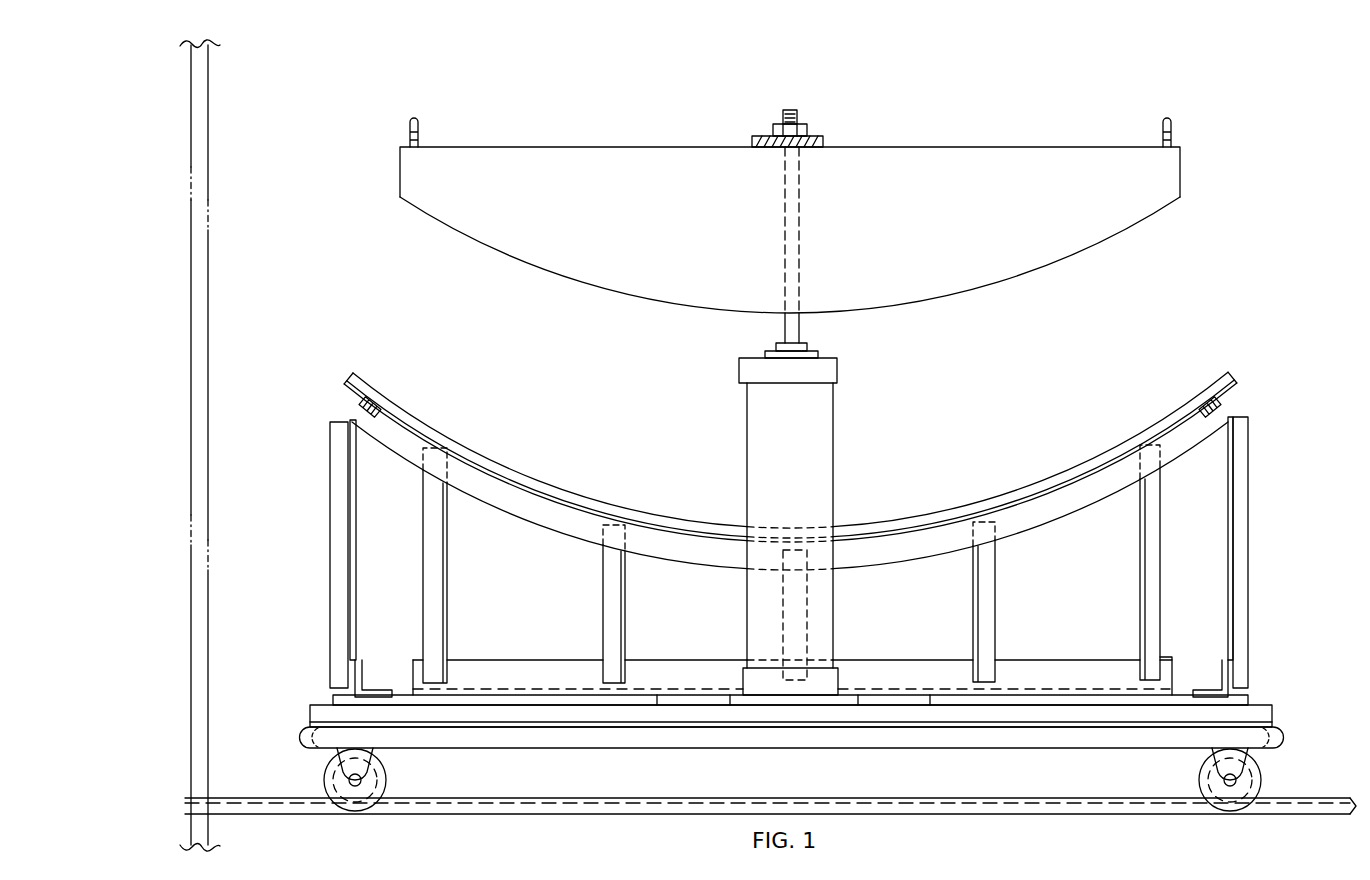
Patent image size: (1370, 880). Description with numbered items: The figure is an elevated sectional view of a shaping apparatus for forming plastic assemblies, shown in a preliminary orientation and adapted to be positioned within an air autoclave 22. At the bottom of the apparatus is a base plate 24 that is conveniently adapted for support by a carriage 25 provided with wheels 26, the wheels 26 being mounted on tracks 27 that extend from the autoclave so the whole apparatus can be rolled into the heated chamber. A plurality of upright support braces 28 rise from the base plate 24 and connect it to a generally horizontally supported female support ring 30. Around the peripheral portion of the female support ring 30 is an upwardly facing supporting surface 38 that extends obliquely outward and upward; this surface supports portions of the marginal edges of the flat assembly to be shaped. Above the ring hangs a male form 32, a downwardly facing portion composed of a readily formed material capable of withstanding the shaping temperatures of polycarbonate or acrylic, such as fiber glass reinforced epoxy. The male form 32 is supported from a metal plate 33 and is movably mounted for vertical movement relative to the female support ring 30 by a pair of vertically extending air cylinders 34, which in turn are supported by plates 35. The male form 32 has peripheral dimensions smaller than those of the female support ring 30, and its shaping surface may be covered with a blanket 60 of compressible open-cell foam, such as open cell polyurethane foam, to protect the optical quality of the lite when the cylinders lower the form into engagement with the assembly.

The air autoclave 22 is at (210, 313).
The base plate 24 is at (333, 698).
The carriage 25 is at (298, 742).
The wheels 26 is at (386, 787).
The tracks 27 is at (660, 798).
The upright support braces 28 is at (422, 570).
The female support ring 30 is at (1187, 463).
The male form 32 is at (916, 228).
The metal plate 33 is at (820, 135).
The air cylinders 34 is at (835, 447).
The plates 35 is at (817, 700).
The supporting surface 38 is at (1175, 398).
The blanket 60 is at (1104, 241).